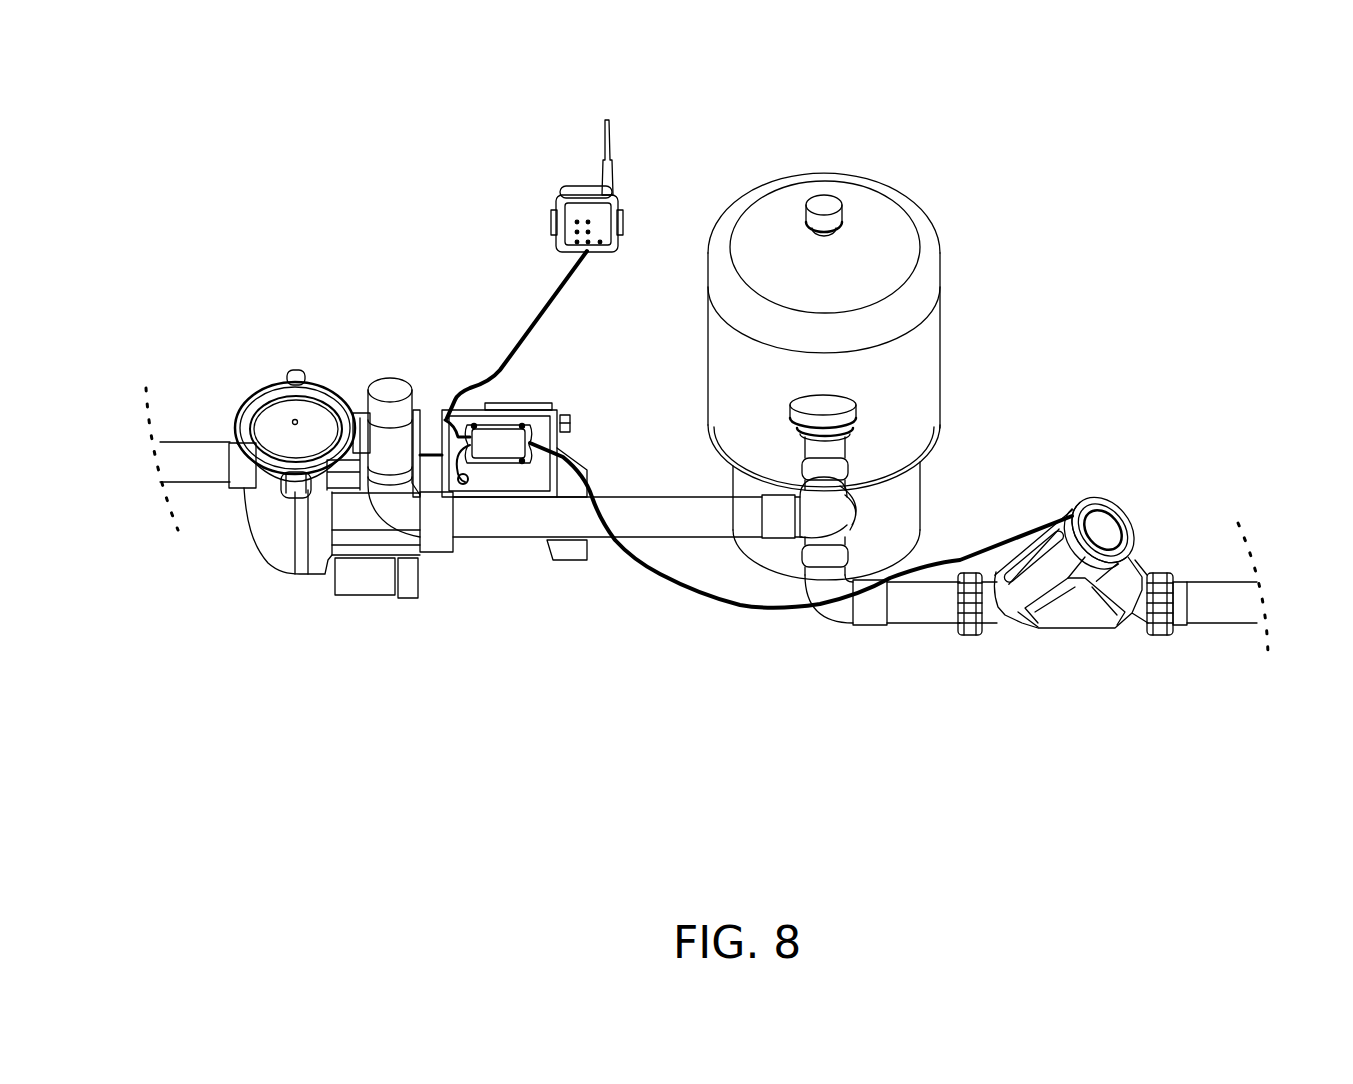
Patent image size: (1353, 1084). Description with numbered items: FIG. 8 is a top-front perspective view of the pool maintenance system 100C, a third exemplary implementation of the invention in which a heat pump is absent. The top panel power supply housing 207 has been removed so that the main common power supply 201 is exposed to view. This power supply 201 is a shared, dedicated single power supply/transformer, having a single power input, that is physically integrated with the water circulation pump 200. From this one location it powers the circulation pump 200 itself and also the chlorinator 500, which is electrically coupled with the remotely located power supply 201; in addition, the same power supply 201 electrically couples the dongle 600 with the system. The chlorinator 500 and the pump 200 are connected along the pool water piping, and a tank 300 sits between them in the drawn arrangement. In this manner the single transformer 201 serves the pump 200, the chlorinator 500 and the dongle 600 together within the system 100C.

The pool maintenance system 100C is at (417, 78).
The water circulation pump 200 is at (264, 364).
The main common power supply 201 is at (497, 430).
The top panel power supply housing 207 is at (560, 415).
The filter tank 300 is at (920, 165).
The chlorinator 500 is at (1094, 458).
The dongle 600 is at (565, 164).